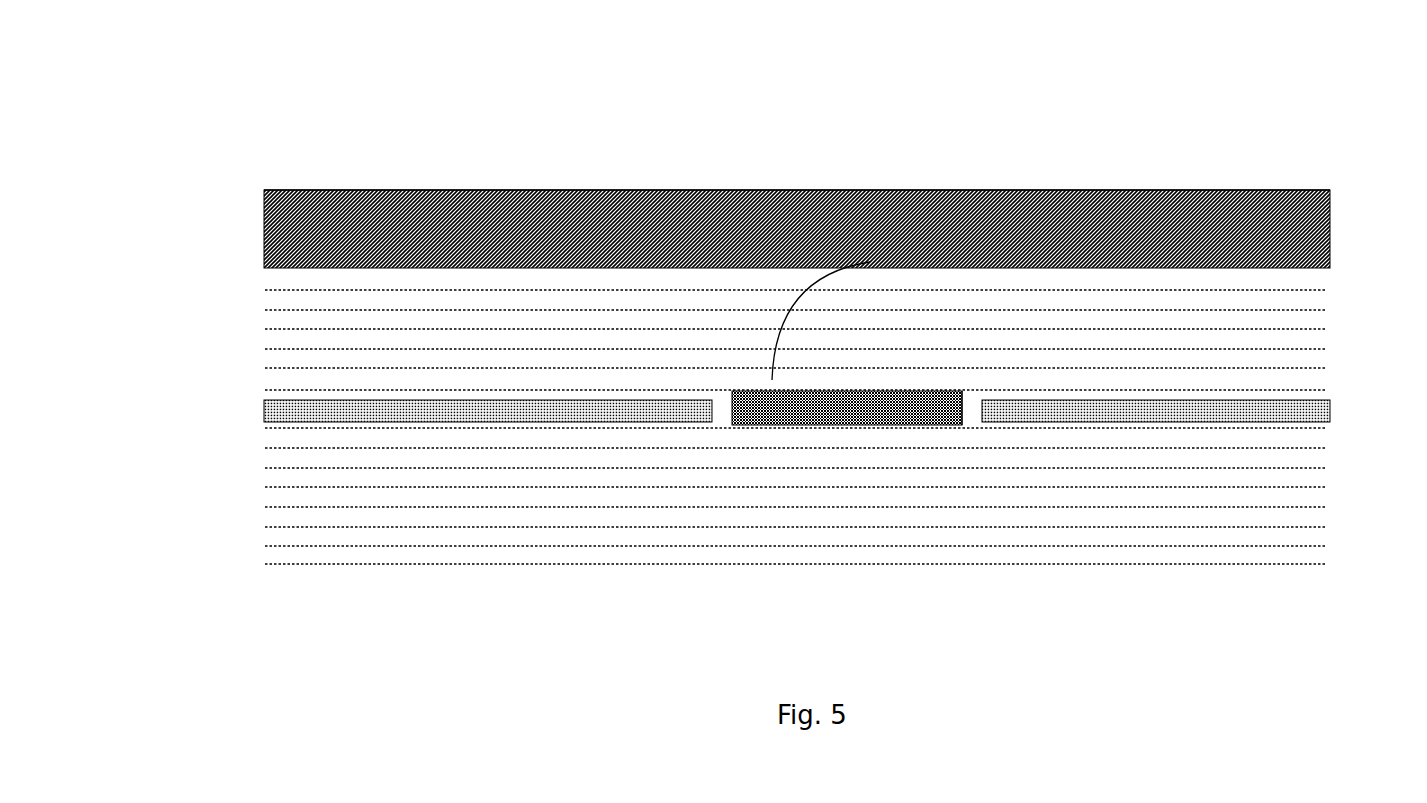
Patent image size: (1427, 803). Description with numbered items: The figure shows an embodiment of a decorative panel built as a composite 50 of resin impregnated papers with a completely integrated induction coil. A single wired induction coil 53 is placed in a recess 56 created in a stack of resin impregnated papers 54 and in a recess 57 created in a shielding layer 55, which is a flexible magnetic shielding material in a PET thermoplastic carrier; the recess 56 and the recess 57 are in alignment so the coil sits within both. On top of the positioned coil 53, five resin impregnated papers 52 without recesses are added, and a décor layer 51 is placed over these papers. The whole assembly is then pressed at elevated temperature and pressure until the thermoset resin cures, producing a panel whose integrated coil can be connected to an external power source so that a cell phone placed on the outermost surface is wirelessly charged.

The composite 50 is at (820, 146).
The décor layer 51 is at (264, 258).
The resin impregnated papers 52 is at (302, 328).
The induction coil 53 is at (716, 410).
The stack of resin impregnated papers 54 is at (302, 520).
The shielding layer 55 is at (1330, 410).
The recess 56 is at (912, 190).
The recess 57 is at (975, 413).